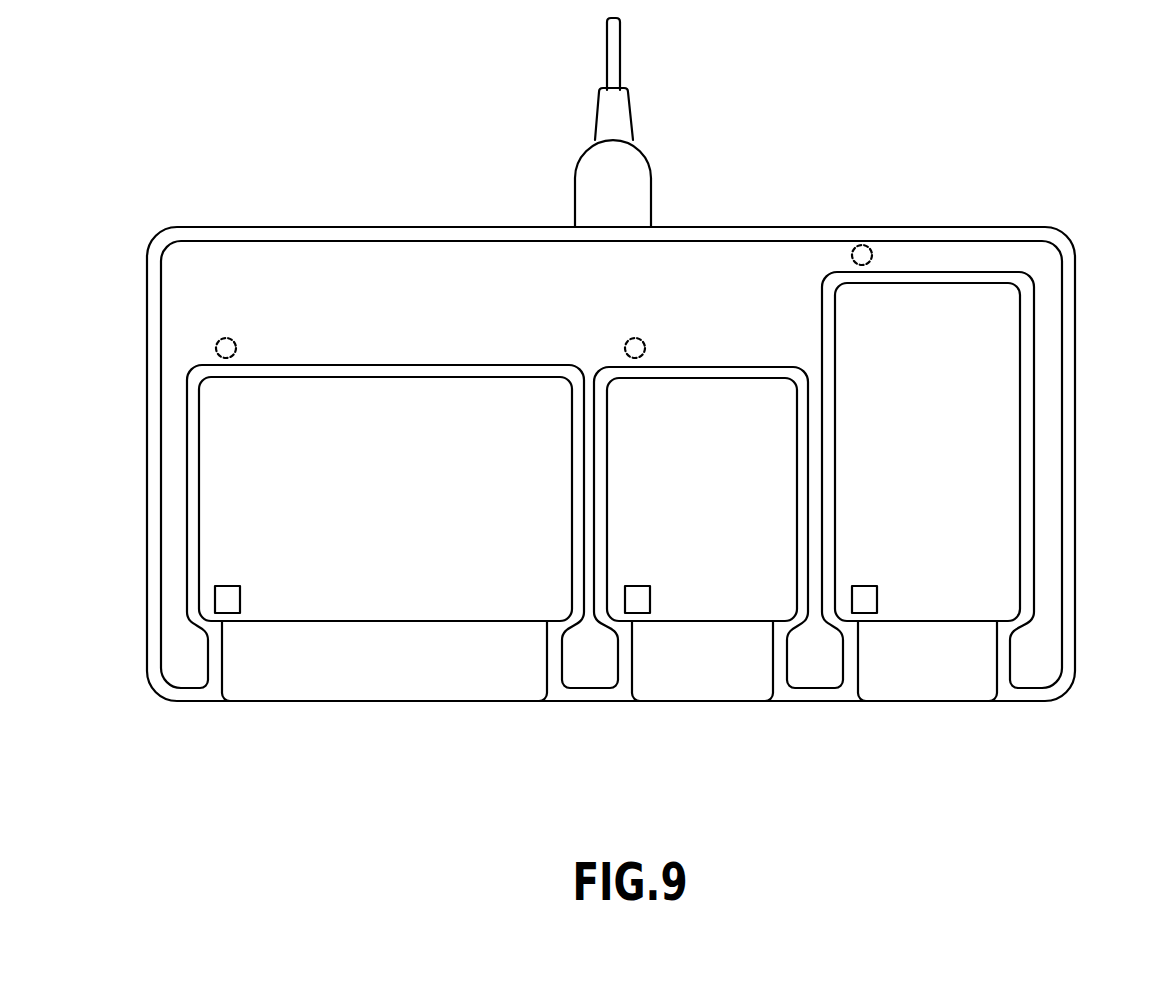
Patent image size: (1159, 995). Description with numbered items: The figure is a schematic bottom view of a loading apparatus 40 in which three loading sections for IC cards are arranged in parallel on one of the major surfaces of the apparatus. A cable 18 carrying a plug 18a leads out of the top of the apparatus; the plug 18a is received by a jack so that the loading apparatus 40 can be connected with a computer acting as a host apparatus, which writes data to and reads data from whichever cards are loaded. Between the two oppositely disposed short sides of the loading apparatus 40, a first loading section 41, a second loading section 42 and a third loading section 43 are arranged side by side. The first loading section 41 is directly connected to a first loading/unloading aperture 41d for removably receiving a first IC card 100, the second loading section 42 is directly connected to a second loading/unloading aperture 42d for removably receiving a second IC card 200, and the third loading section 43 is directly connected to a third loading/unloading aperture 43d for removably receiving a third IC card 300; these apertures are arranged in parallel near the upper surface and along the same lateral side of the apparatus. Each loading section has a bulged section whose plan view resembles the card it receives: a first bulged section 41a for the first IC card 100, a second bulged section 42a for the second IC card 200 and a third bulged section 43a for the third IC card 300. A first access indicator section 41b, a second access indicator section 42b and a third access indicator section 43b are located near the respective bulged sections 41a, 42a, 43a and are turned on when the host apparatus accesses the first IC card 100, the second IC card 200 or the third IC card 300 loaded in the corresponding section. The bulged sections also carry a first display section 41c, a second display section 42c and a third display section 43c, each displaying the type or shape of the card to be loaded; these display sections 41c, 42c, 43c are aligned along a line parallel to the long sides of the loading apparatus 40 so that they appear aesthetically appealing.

The cable 18 is at (615, 50).
The plug 18a is at (612, 164).
The loading apparatus 40 is at (1053, 128).
The first loading section 41 is at (993, 390).
The first bulged section 41a is at (993, 488).
The first access indicator section 41b is at (862, 246).
The first display section 41c is at (860, 586).
The first loading/unloading aperture 41d is at (935, 625).
The second loading section 42 is at (725, 388).
The second bulged section 42a is at (770, 455).
The second access indicator section 42b is at (636, 338).
The second display section 42c is at (635, 586).
The second loading/unloading aperture 42d is at (700, 625).
The third loading section 43 is at (421, 388).
The third bulged section 43a is at (499, 455).
The third access indicator section 43b is at (226, 338).
The third display section 43c is at (226, 586).
The third loading/unloading aperture 43d is at (355, 625).
The first IC card 100 is at (920, 693).
The second IC card 200 is at (700, 693).
The third IC card 300 is at (384, 693).